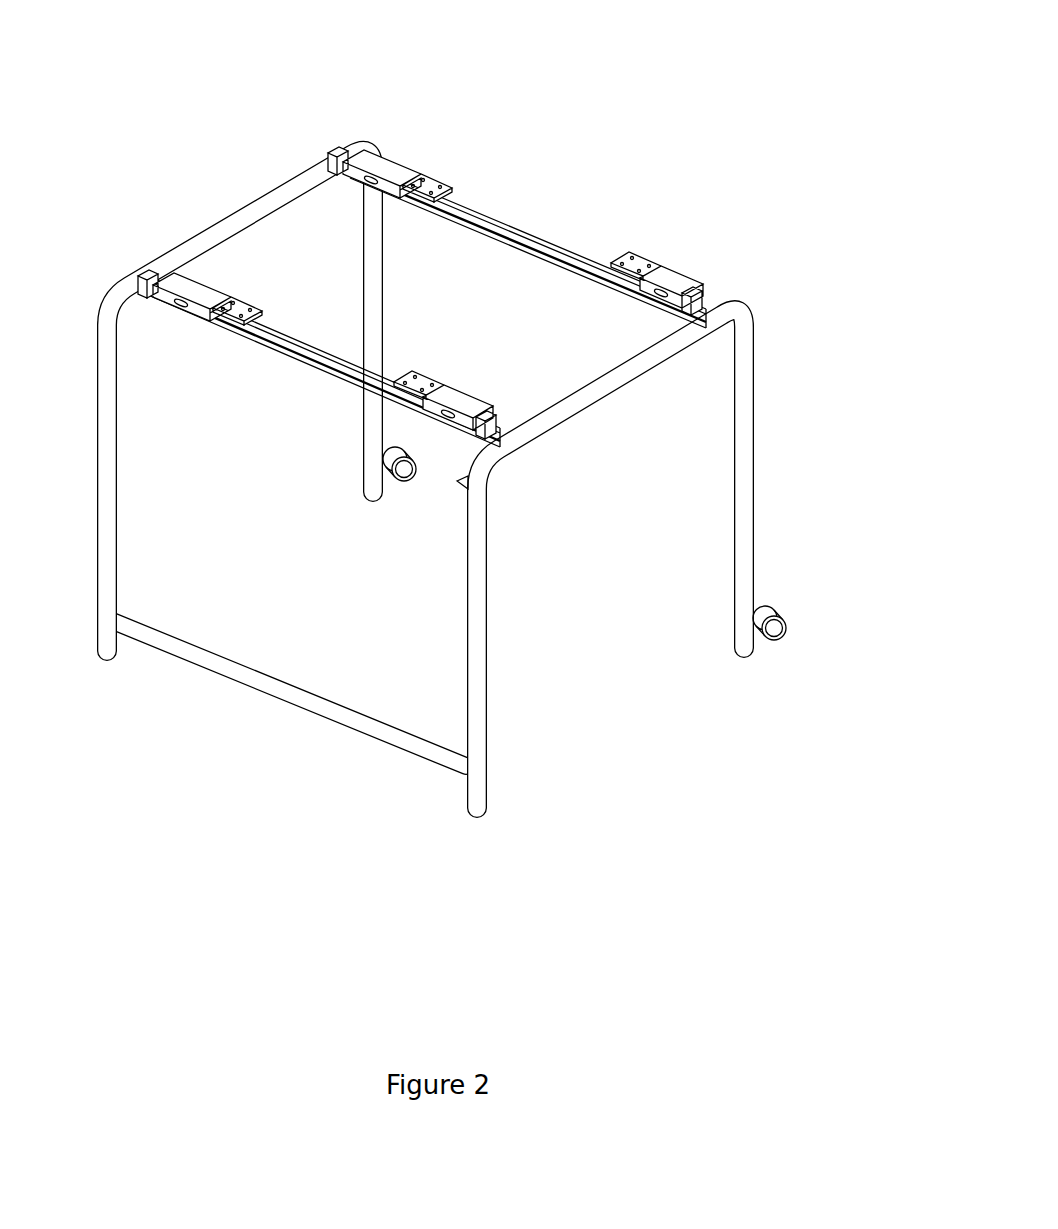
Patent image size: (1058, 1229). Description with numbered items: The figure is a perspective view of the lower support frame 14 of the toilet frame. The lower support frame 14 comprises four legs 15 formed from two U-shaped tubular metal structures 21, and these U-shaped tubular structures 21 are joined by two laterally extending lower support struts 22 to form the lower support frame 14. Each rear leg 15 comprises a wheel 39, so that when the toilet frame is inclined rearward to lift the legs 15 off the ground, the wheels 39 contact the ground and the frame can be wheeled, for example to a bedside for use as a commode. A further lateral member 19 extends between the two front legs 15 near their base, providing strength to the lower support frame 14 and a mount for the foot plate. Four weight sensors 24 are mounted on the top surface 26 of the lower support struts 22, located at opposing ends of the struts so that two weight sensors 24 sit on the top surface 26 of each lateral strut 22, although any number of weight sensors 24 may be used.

The lower support frame 14 is at (655, 106).
The leg 15 is at (107, 548).
The lateral member 19 is at (293, 695).
The U-shaped tubular metal structure 21 is at (272, 197).
The lower support strut 22 is at (477, 218).
The weight sensor 24 is at (401, 170).
The top surface 26 is at (557, 252).
The wheel 39 is at (397, 482).